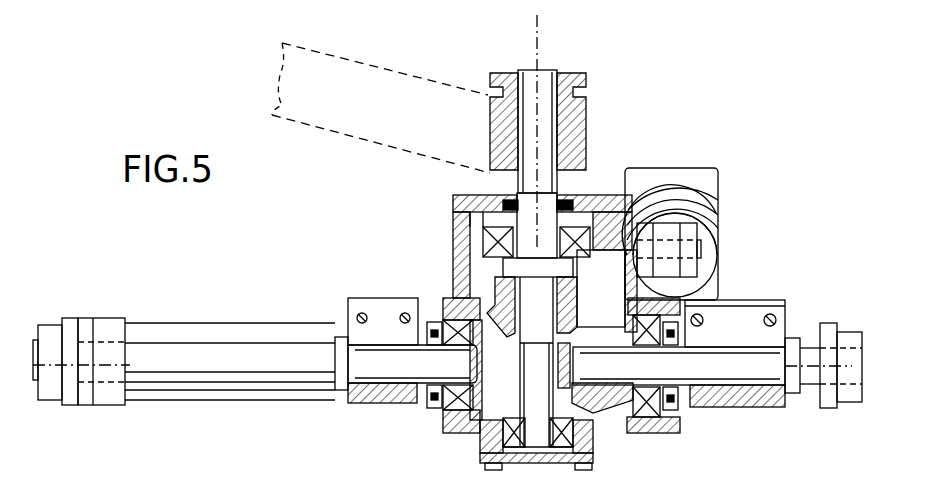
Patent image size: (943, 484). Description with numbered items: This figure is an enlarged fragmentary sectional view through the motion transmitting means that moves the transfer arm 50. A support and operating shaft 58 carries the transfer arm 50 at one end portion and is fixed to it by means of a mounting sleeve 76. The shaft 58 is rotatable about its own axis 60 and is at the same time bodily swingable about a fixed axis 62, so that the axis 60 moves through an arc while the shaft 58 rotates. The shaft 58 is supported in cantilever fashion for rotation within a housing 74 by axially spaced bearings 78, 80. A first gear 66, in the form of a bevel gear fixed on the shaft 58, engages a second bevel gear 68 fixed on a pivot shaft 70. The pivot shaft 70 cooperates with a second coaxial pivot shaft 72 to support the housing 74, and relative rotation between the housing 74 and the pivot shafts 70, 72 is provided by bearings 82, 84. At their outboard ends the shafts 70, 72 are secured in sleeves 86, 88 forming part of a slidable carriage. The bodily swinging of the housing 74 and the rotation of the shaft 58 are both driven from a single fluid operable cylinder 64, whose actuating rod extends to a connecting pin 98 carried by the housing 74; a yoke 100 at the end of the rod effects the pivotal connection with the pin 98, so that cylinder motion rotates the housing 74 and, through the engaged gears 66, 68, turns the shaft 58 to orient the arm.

The transfer arm 50 is at (348, 58).
The axis 60 is at (537, 40).
The support and operating shaft 58 is at (545, 88).
The mounting sleeve 76 is at (565, 130).
The bearing 78 is at (590, 200).
The housing 74 is at (453, 280).
The first gear 66 is at (572, 292).
The fluid operable cylinder 64 is at (667, 193).
The yoke 100 is at (688, 235).
The connecting pin 98 is at (698, 245).
The sleeve 86 is at (377, 313).
The sleeve 88 is at (773, 332).
The pivot shaft 72 is at (403, 377).
The bearing 82 is at (453, 405).
The bearing 80 is at (480, 437).
The second bevel gear 68 is at (605, 402).
The bearing 84 is at (642, 420).
The pivot shaft 70 is at (697, 377).
The fixed axis 62 is at (807, 362).